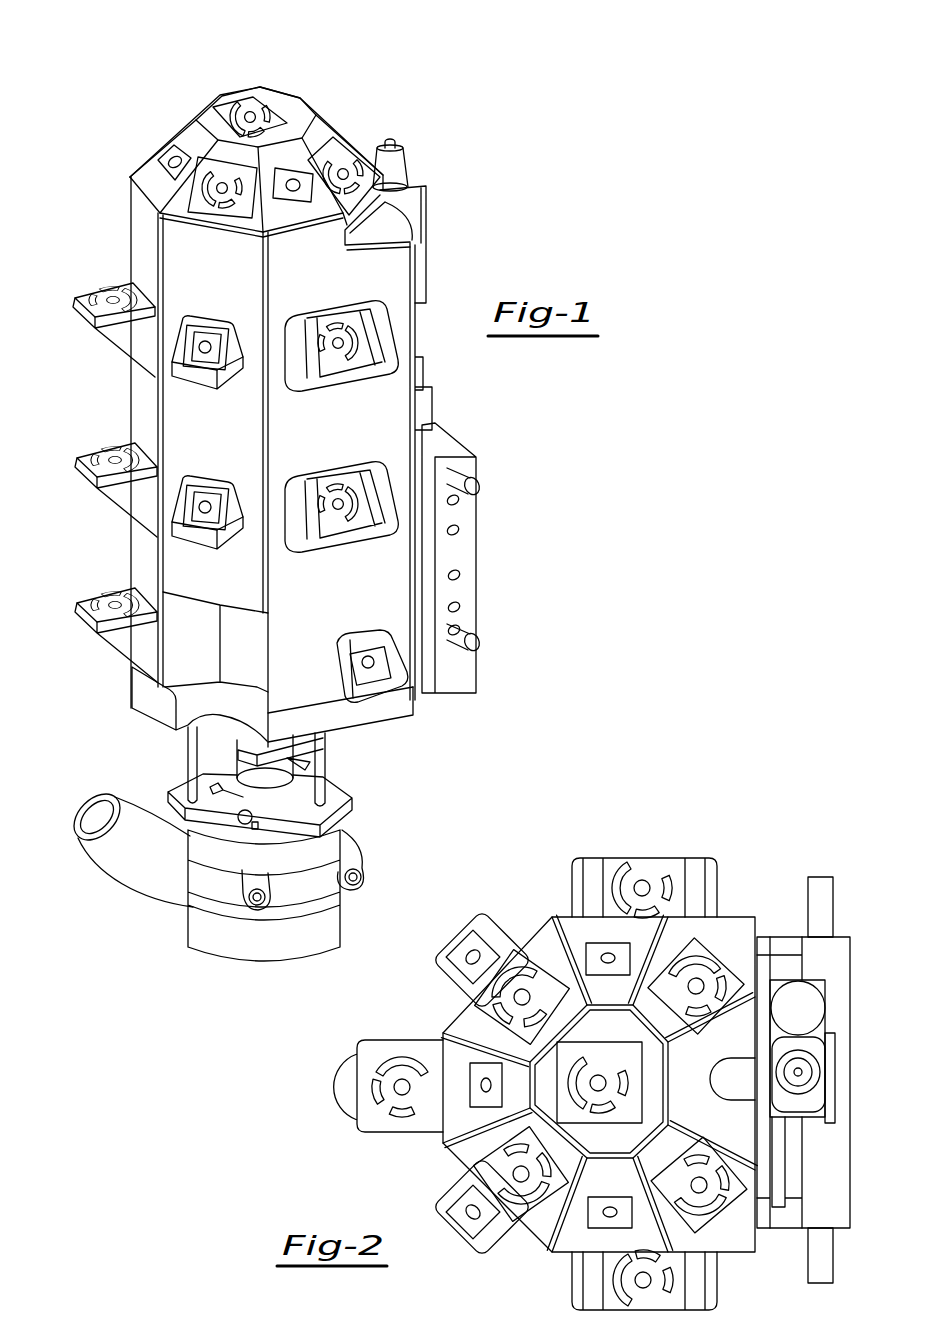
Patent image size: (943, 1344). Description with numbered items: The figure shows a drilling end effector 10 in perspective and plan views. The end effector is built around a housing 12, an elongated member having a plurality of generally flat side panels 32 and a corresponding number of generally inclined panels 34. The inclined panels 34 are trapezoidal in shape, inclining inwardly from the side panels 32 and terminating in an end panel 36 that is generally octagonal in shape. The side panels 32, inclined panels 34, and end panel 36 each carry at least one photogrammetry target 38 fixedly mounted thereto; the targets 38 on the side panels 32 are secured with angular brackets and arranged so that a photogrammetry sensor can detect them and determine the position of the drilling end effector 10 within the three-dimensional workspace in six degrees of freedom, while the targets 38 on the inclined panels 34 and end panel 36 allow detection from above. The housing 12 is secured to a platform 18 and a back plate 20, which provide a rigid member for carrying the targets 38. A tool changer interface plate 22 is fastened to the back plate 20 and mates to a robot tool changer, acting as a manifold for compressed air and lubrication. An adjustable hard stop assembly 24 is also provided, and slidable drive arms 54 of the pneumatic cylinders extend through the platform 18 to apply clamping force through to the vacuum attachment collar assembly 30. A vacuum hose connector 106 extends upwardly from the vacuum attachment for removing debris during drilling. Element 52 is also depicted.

In FIG. 1, the drilling end effector 10 is at (442, 116).
In FIG. 2, the drilling end effector 10 is at (772, 846).
In FIG. 1, the housing 12 is at (125, 212).
In FIG. 2, the housing 12 is at (553, 918).
In FIG. 1, the platform 18 is at (390, 726).
In FIG. 1, the back plate 20 is at (442, 675).
In FIG. 2, the back plate 20 is at (779, 1250).
In FIG. 1, the tool changer interface plate 22 is at (477, 530).
In FIG. 2, the tool changer interface plate 22 is at (849, 1158).
In FIG. 1, the adjustable hard stop assembly 24 is at (173, 753).
In FIG. 1, the vacuum attachment collar assembly 30 is at (350, 912).
In FIG. 1, the side panels 32 is at (143, 247).
In FIG. 2, the side panels 32 is at (593, 910).
In FIG. 1, the inclined panels 34 is at (150, 170).
In FIG. 2, the inclined panels 34 is at (473, 1152).
In FIG. 1, the end panel 36 is at (243, 97).
In FIG. 2, the end panel 36 is at (647, 1087).
In FIG. 1, the photogrammetry target 38 is at (88, 293).
In FIG. 2, the photogrammetry target 38 is at (525, 972).
In FIG. 1, the sensor block 52 is at (425, 201).
In FIG. 2, the sensor block 52 is at (828, 1070).
In FIG. 1, the drive arm 54 is at (330, 752).
In FIG. 1, the vacuum hose connector 106 is at (140, 877).